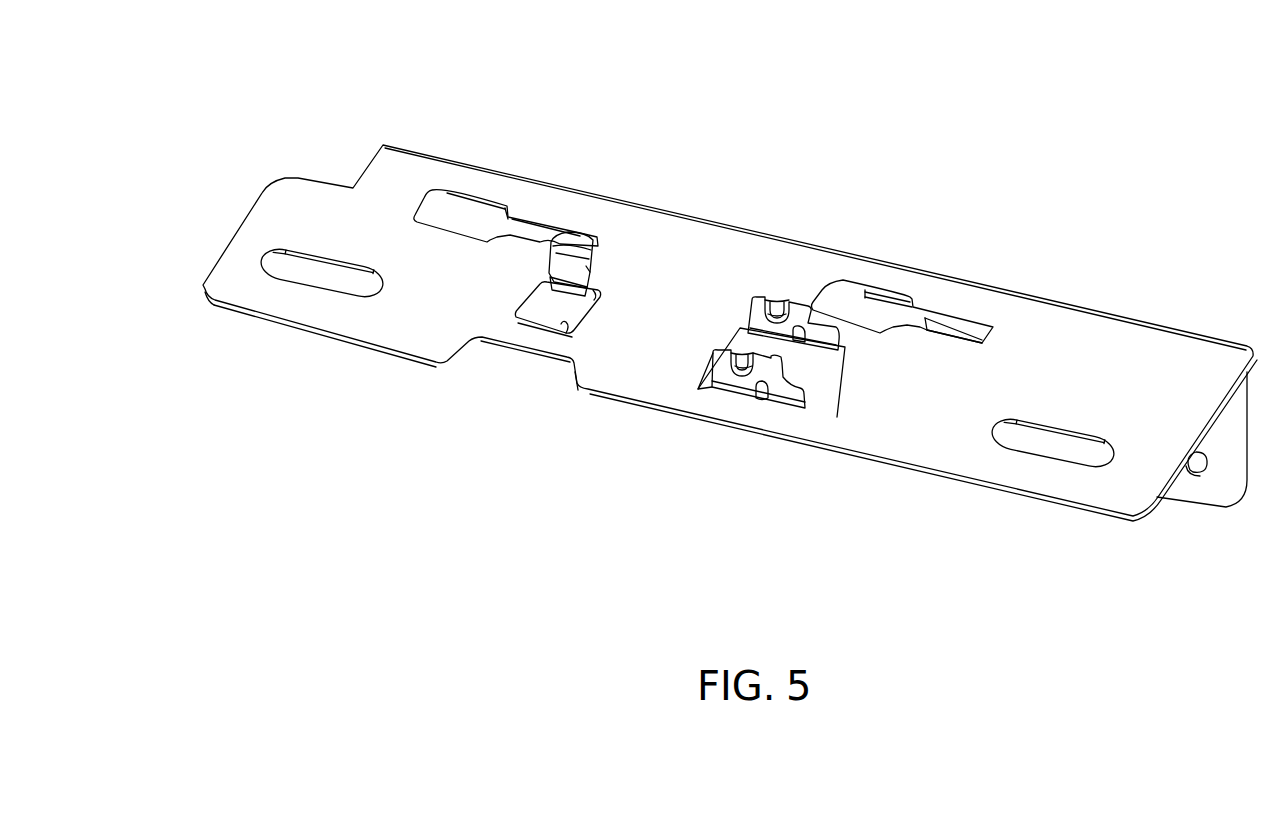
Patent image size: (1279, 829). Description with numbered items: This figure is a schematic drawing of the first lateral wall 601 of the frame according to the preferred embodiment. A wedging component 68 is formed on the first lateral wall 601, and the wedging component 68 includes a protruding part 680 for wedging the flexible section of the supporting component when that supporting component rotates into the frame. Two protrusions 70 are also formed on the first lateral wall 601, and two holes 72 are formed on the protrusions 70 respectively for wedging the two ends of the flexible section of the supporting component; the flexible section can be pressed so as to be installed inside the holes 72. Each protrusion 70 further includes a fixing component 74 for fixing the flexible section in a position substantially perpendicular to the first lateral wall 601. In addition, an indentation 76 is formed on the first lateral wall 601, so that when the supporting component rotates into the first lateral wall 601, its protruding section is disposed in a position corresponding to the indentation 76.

The first lateral wall 601 is at (440, 108).
The indentation 76 is at (513, 365).
The wedging component 68 is at (596, 268).
The protruding part 680 is at (570, 257).
The protrusion 70 is at (753, 313).
The hole 72 is at (763, 396).
The fixing component 74 is at (780, 310).